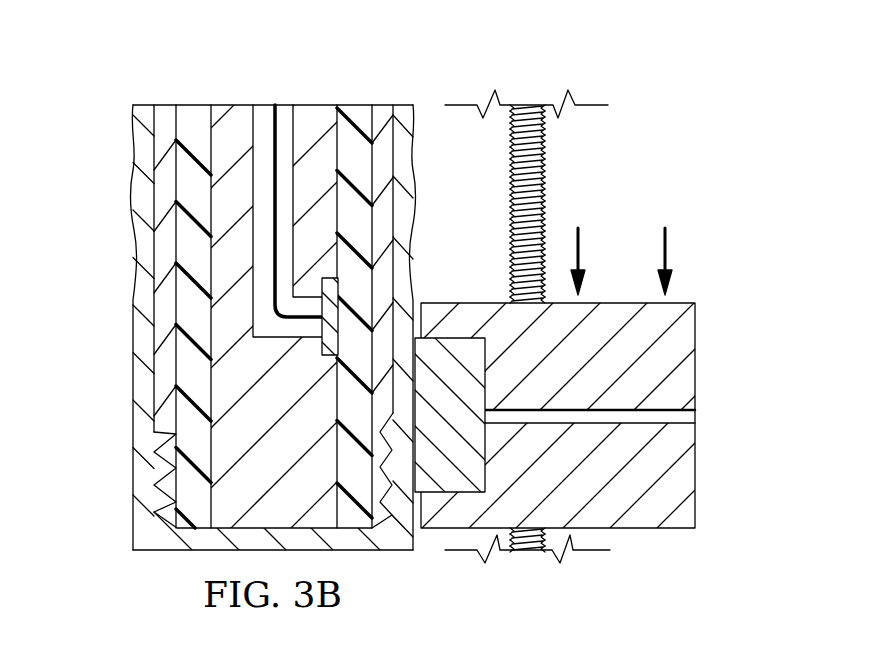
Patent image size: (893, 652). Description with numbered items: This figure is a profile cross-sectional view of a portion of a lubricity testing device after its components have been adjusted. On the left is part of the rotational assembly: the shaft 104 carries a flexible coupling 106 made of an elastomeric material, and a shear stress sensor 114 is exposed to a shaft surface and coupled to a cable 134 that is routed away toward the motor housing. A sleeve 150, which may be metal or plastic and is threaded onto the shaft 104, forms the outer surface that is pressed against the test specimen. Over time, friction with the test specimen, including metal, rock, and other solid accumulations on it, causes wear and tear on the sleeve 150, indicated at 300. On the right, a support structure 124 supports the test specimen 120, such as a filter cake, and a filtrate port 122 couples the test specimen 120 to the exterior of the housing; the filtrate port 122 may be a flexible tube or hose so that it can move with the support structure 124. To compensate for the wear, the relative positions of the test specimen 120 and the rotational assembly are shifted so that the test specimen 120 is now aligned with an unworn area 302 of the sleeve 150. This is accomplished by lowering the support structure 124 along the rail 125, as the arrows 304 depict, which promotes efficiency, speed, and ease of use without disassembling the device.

The shaft 104 is at (382, 112).
The flexible coupling 106 is at (192, 112).
The shear stress sensor 114 is at (325, 345).
The test specimen 120 is at (478, 452).
The filtrate port 122 is at (685, 418).
The support structure 124 is at (685, 478).
The rail 125 is at (545, 163).
The cable 134 is at (282, 118).
The sleeve 150 is at (145, 110).
The wear and tear 300 is at (128, 212).
The area 302 is at (406, 458).
The lowering movement 304 is at (582, 245).